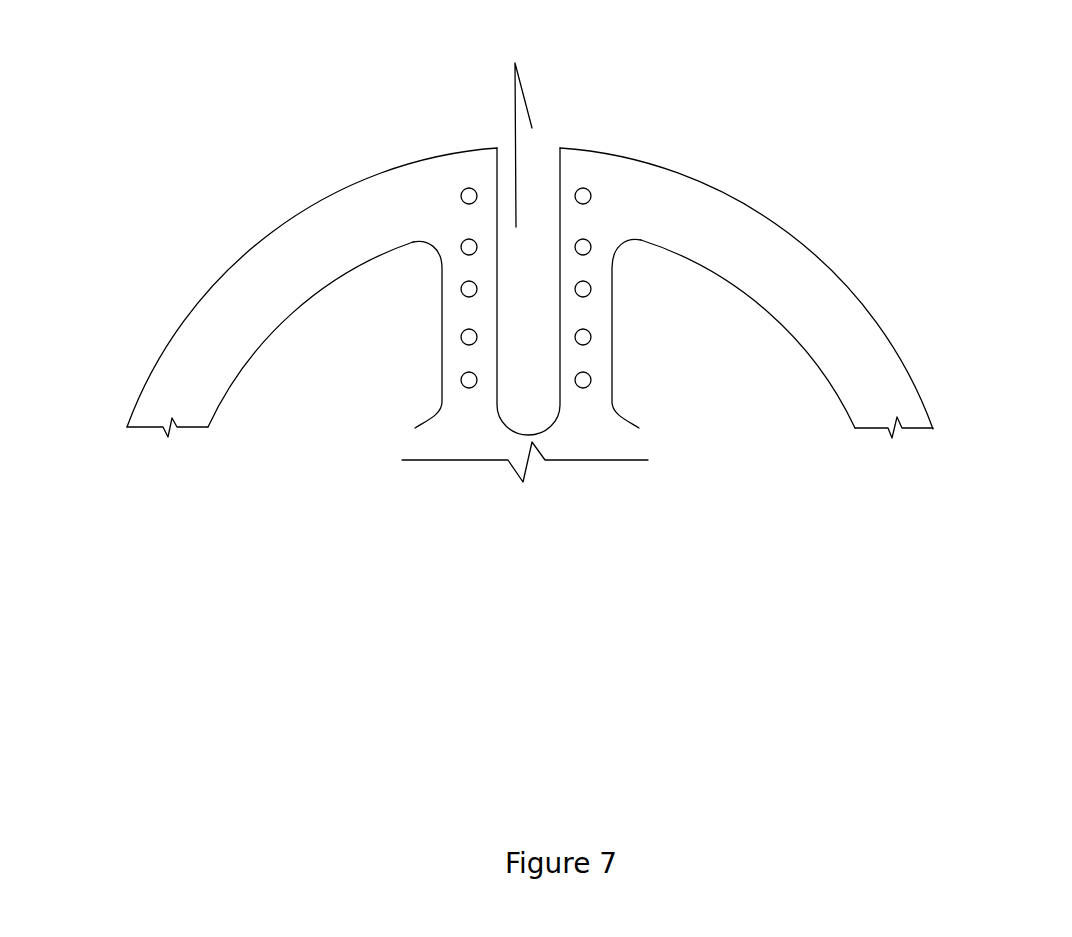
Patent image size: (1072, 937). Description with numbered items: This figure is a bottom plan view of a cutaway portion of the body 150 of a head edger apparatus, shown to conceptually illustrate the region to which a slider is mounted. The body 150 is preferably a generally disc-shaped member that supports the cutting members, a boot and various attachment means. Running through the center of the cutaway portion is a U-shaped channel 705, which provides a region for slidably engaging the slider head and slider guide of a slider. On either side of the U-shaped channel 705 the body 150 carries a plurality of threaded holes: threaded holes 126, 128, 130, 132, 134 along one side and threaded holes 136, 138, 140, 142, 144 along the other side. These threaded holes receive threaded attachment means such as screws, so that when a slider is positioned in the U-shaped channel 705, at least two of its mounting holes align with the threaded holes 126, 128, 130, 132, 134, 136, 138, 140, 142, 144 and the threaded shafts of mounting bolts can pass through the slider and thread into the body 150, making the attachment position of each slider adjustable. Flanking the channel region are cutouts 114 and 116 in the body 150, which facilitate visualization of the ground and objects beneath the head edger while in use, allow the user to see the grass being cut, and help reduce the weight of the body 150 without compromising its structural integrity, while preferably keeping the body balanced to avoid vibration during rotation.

The U-shaped channel 705 is at (532, 128).
The cutout 114 is at (737, 387).
The cutout 116 is at (325, 372).
The body 150 is at (270, 339).
The threaded hole 126 is at (591, 196).
The threaded hole 128 is at (591, 247).
The threaded hole 130 is at (591, 289).
The threaded hole 132 is at (591, 337).
The threaded hole 134 is at (591, 380).
The threaded hole 136 is at (461, 196).
The threaded hole 138 is at (461, 247).
The threaded hole 140 is at (461, 289).
The threaded hole 142 is at (461, 337).
The threaded hole 144 is at (461, 380).